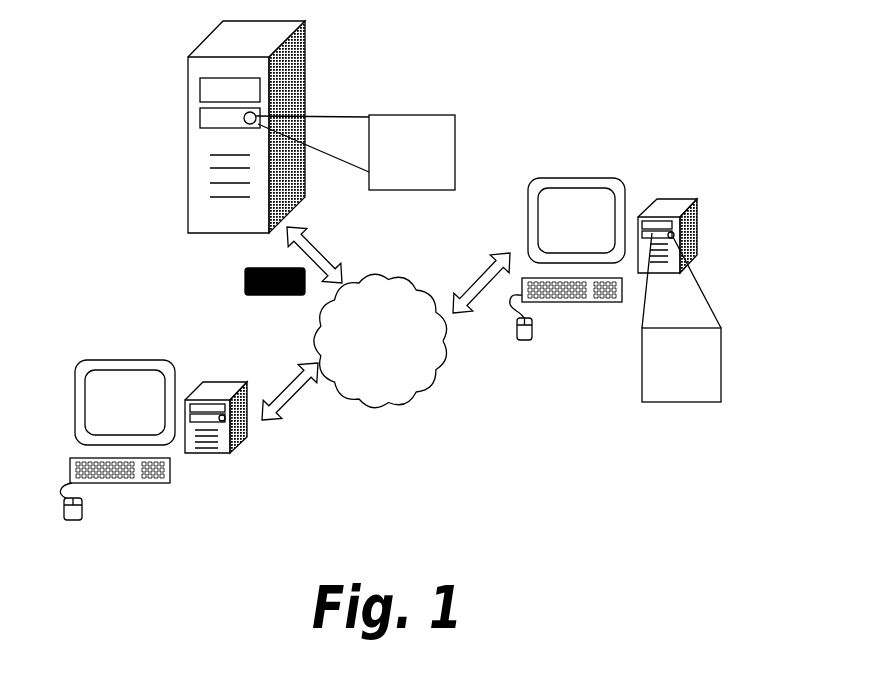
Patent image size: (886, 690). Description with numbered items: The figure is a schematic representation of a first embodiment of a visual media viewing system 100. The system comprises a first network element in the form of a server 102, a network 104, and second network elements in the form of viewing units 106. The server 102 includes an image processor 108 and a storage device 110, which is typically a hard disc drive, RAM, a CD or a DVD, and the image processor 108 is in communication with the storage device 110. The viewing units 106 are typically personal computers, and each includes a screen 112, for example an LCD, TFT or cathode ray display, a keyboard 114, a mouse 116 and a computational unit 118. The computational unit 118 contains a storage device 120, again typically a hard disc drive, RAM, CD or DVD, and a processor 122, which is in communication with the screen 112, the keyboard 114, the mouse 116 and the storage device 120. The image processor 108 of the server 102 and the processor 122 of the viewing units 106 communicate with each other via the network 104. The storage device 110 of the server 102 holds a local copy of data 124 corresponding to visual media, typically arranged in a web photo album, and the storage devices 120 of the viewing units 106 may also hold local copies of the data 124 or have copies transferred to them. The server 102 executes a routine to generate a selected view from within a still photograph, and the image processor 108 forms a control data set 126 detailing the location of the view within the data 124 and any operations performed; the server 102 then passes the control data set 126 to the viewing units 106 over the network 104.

The visual media viewing system 100 is at (505, 429).
The server 102 is at (227, 127).
The network 104 is at (417, 370).
The viewing unit 106 is at (206, 473).
The image processor 108 is at (248, 90).
The storage device 110 is at (199, 128).
The screen 112 is at (110, 385).
The keyboard 114 is at (137, 482).
The mouse 116 is at (72, 520).
The computational unit 118 is at (747, 210).
The storage device 120 is at (697, 252).
The processor 122 is at (658, 222).
The data 124 is at (452, 115).
The control data set 126 is at (245, 284).